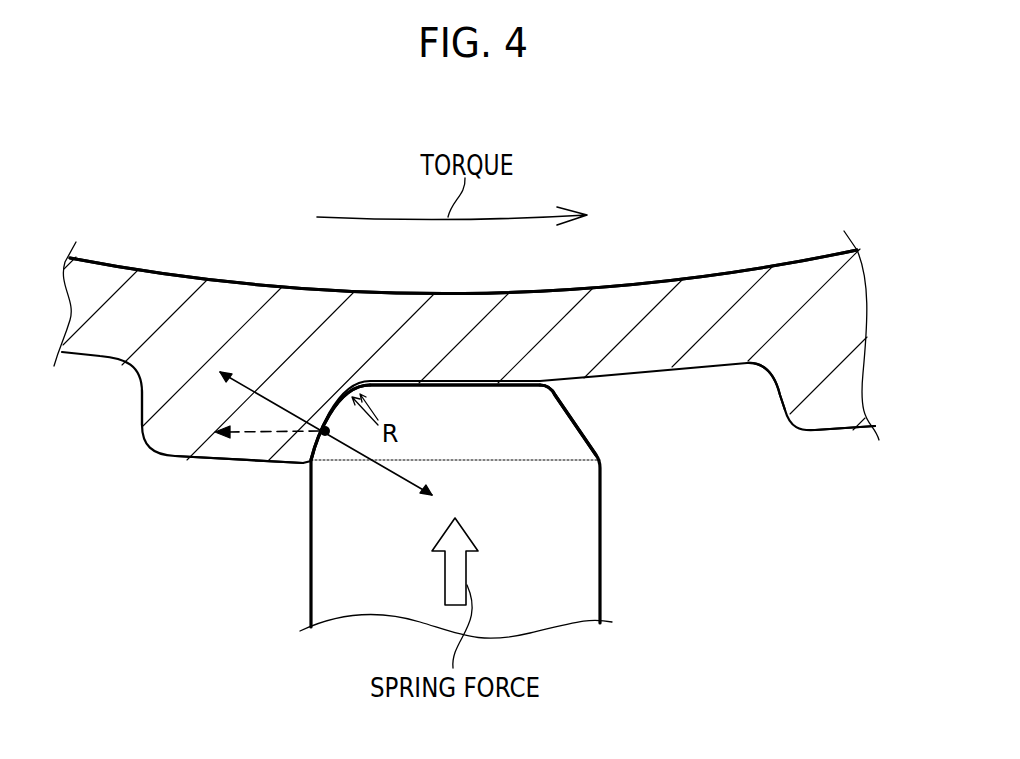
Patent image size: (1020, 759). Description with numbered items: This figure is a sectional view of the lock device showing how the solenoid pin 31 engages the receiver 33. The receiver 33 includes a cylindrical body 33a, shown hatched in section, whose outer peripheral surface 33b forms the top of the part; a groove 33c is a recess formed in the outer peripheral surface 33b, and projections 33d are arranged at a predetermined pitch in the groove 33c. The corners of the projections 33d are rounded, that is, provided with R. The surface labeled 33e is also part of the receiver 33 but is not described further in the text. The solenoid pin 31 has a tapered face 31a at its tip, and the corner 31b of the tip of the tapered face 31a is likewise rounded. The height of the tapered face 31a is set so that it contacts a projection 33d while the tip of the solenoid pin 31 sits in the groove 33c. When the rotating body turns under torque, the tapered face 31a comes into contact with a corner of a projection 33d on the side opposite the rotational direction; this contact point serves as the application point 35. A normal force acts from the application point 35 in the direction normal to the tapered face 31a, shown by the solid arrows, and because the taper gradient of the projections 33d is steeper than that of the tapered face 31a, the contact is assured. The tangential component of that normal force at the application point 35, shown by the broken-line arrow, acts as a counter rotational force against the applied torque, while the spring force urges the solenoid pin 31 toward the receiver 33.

The solenoid pin 31 is at (563, 557).
The tapered face 31a is at (450, 412).
The corner 31b is at (350, 380).
The receiver 33 is at (147, 457).
The cylindrical body 33a is at (702, 302).
The outer peripheral surface 33b is at (842, 436).
The groove 33c is at (93, 358).
The projections 33d is at (223, 460).
The outer surface of ratchet member 33e is at (638, 284).
The application point 35 is at (327, 436).